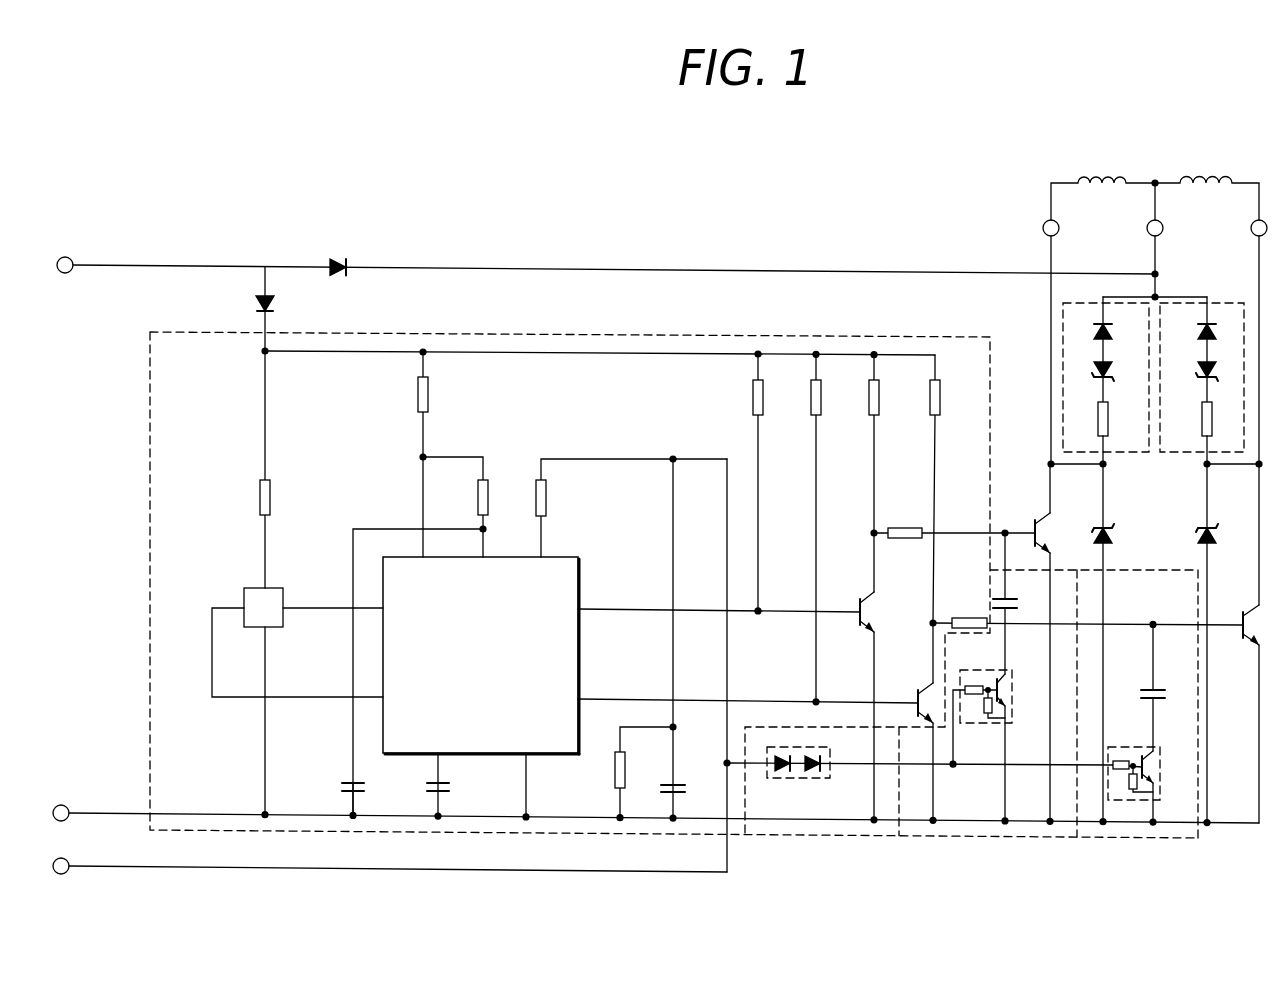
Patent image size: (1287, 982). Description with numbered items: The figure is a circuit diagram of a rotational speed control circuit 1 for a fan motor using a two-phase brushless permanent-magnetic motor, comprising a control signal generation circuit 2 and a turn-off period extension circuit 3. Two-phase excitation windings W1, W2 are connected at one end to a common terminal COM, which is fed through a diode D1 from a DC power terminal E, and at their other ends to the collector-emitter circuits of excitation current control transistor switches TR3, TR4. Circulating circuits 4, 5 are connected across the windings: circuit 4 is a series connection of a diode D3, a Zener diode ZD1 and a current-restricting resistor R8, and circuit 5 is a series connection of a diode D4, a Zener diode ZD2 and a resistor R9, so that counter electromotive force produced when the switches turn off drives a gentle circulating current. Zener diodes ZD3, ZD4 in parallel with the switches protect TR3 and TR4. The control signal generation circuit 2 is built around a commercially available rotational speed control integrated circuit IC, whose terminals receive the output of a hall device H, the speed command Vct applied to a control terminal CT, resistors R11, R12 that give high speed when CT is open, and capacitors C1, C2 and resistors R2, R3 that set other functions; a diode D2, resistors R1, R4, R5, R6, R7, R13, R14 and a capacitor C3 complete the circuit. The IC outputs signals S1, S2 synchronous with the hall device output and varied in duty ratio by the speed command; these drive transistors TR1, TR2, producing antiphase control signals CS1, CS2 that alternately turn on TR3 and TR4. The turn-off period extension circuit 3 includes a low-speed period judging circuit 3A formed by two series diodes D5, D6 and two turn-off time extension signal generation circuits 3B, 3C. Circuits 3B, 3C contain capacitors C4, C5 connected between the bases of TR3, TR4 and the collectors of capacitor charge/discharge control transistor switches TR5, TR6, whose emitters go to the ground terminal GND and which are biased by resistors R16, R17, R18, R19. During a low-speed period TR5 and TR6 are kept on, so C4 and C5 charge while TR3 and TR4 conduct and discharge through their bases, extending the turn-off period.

The rotational speed control circuit 1 is at (738, 252).
The control signal generation circuit 2 is at (790, 334).
The turn-off period extension circuit 3 is at (893, 838).
The low-speed period judging circuit 3A is at (826, 837).
The turn-off time extension signal generation circuit 3B is at (975, 838).
The turn-off time extension signal generation circuit 3C is at (1180, 839).
The circulating circuit 4 is at (1095, 302).
The circulating circuit 5 is at (1226, 302).
The DC power terminal E is at (65, 256).
The ground terminal GND is at (63, 804).
The control terminal CT is at (61, 875).
The speed command Vct is at (632, 857).
The common terminal COM is at (1182, 266).
The excitation winding W1 is at (1100, 176).
The excitation winding W2 is at (1202, 176).
The rotational speed control integrated circuit IC is at (581, 568).
The hall device H is at (297, 701).
The signal S1 is at (602, 593).
The signal S2 is at (602, 683).
The control signal CS1 is at (960, 520).
The control signal CS2 is at (1170, 606).
The diode D1 is at (340, 259).
The diode D2 is at (273, 307).
The diode D3 is at (1112, 340).
The diode D4 is at (1198, 340).
The diode D5 is at (781, 772).
The diode D6 is at (813, 772).
The Zener diode ZD1 is at (1112, 384).
The Zener diode ZD2 is at (1198, 384).
The Zener diode ZD3 is at (1112, 535).
The Zener diode ZD4 is at (1198, 535).
The resistor R1 is at (283, 497).
The resistor R2 is at (428, 390).
The resistor R3 is at (478, 497).
The resistor R4 is at (775, 394).
The resistor R5 is at (833, 394).
The resistor R6 is at (891, 394).
The resistor R7 is at (952, 394).
The resistor R8 is at (1108, 436).
The resistor R9 is at (1202, 436).
The resistor R11 is at (537, 497).
The resistor R12 is at (625, 762).
The resistor R13 is at (907, 528).
The resistor R14 is at (967, 618).
The bias resistor R16 is at (970, 694).
The bias resistor R17 is at (993, 708).
The bias resistor R18 is at (1118, 770).
The bias resistor R19 is at (1131, 793).
The capacitor C1 is at (449, 780).
The capacitor C2 is at (364, 780).
The capacitor C3 is at (681, 788).
The capacitor C4 is at (1017, 604).
The capacitor C5 is at (1167, 694).
The transistor TR1 is at (853, 602).
The transistor TR2 is at (913, 690).
The excitation current control transistor switch TR3 is at (1033, 517).
The excitation current control transistor switch TR4 is at (1241, 610).
The capacitor charge/discharge control transistor switch TR5 is at (997, 676).
The capacitor charge/discharge control transistor switch TR6 is at (1125, 746).